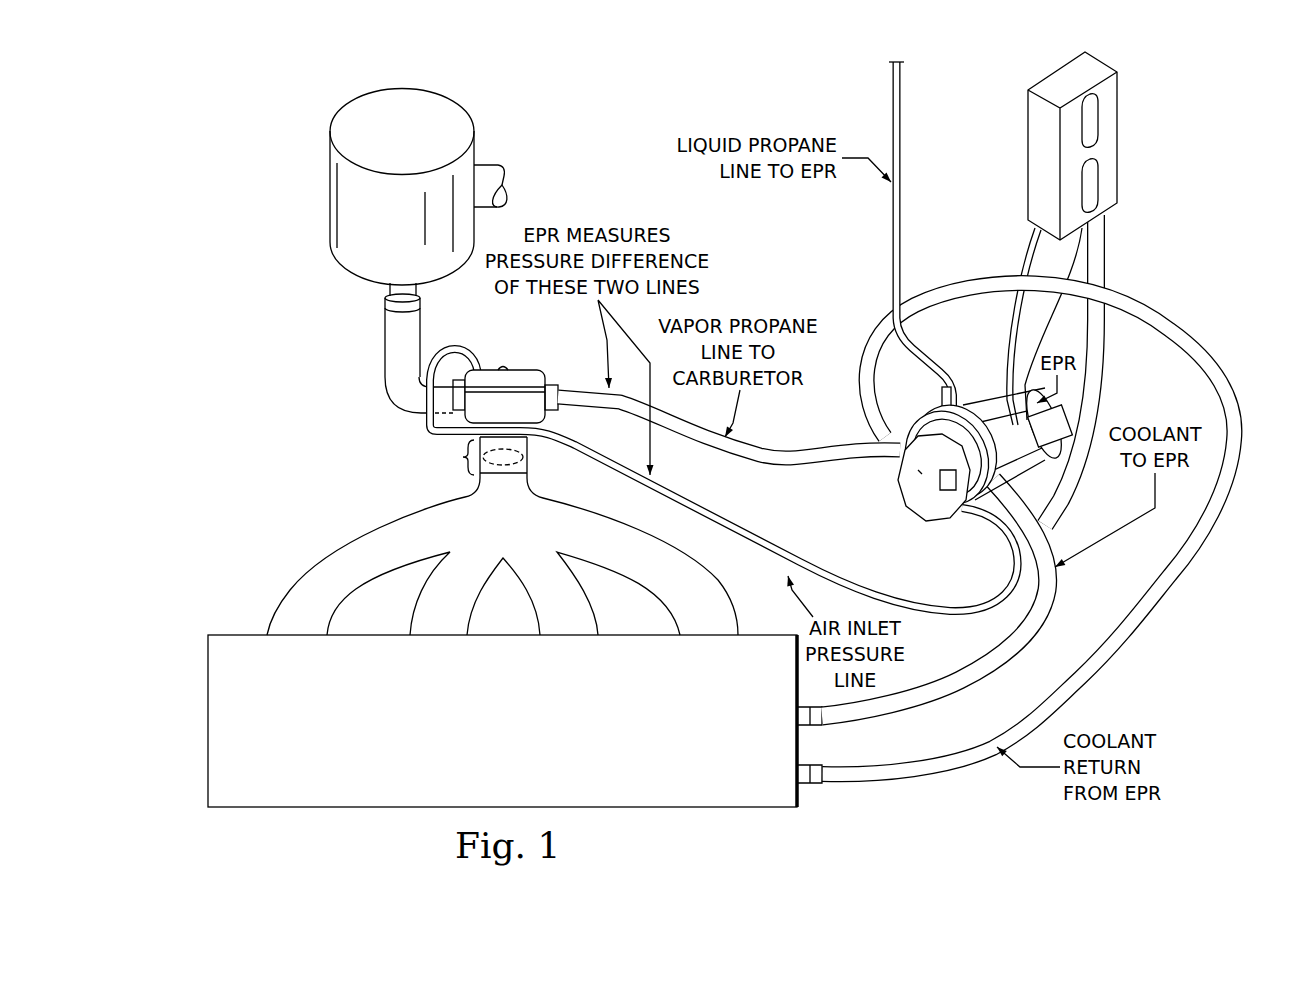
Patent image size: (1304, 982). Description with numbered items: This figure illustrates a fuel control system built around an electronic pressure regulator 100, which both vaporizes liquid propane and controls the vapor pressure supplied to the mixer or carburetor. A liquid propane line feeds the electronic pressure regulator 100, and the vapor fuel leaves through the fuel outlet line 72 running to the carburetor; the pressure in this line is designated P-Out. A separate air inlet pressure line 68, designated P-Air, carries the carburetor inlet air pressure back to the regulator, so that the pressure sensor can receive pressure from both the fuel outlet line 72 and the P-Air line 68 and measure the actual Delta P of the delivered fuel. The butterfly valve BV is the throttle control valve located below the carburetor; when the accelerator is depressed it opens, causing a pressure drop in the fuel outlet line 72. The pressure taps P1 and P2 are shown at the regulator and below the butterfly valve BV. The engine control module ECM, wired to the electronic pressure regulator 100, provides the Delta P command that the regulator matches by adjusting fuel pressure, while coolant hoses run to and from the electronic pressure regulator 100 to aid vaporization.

The fuel outlet line 72 is at (575, 388).
The P-Air line 68 is at (766, 562).
The electronic pressure regulator 100 is at (932, 514).
The pressure regulator / first pressure tap P1 is at (511, 381).
The second pressure tap P2 is at (519, 457).
The butterfly valve BV is at (451, 457).
The engine control module ECM is at (1120, 135).